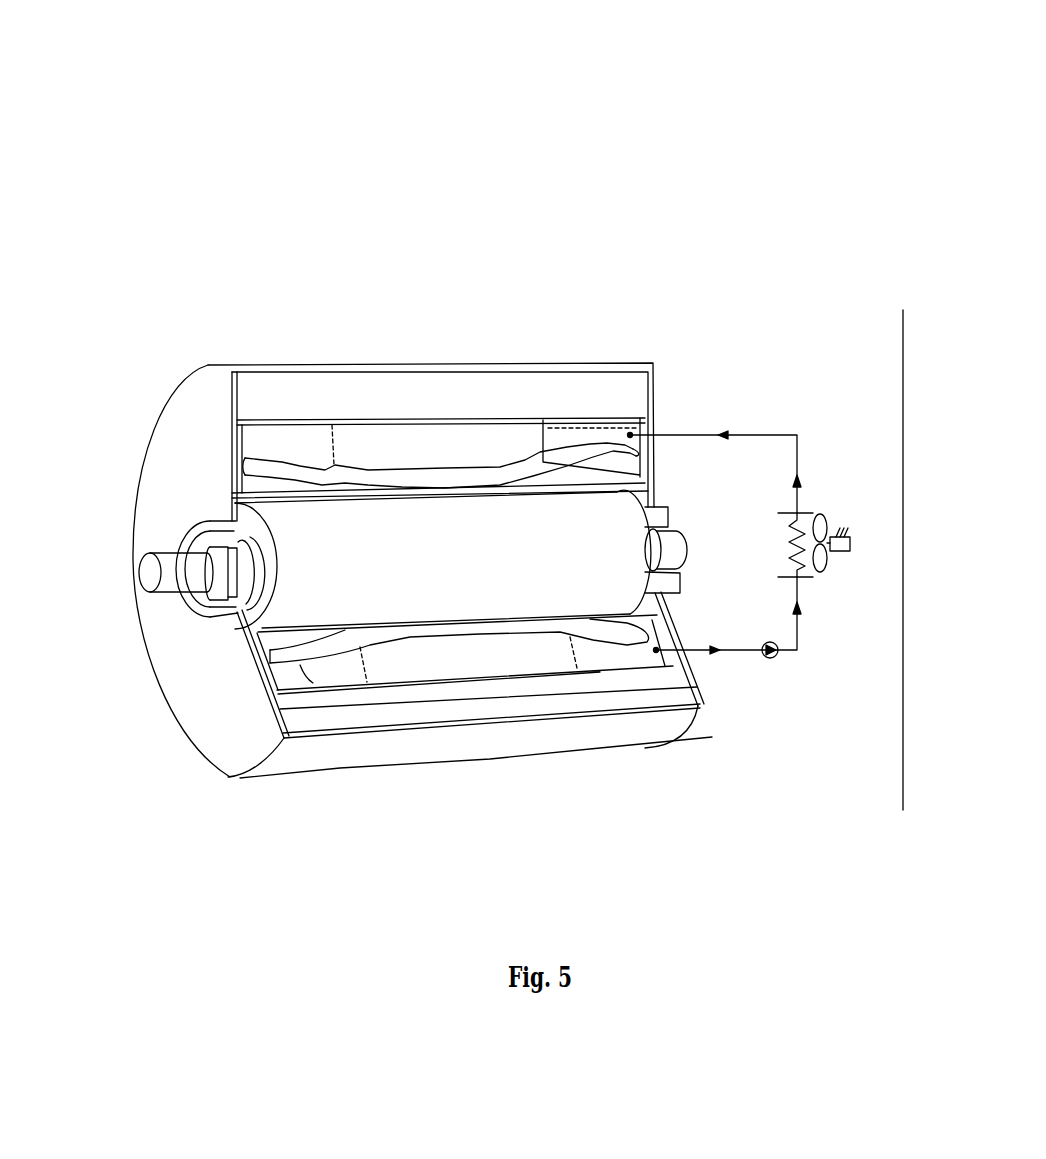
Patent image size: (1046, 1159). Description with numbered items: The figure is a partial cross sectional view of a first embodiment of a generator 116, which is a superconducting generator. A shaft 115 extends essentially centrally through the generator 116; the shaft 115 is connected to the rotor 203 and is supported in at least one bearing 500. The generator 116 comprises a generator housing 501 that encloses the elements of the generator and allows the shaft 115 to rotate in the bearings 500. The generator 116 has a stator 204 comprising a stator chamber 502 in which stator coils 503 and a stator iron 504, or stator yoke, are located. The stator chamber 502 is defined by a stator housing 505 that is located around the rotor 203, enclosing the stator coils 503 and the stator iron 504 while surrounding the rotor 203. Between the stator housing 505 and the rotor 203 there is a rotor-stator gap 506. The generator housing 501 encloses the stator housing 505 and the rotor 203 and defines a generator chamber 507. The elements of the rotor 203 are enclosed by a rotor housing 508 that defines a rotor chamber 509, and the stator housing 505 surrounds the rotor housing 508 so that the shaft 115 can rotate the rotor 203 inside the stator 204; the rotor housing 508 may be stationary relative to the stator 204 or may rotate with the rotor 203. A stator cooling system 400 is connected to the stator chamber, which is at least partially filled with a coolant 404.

The generator 116 is at (483, 135).
The stator housing 505 is at (290, 420).
The stator chamber 502 is at (287, 442).
The stator coils 503 is at (282, 468).
The stator iron 504 is at (425, 447).
The stator 204 is at (488, 405).
The generator chamber 507 is at (522, 387).
The rotor-stator gap 506 is at (593, 483).
The stator cooling system 400 is at (762, 397).
The rotor chamber 509 is at (448, 548).
The rotor housing 508 is at (500, 540).
The rotor 203 is at (303, 570).
The shaft 115 is at (167, 572).
The bearing 500 is at (248, 572).
The coolant 404 is at (598, 657).
The generator housing 501 is at (473, 743).